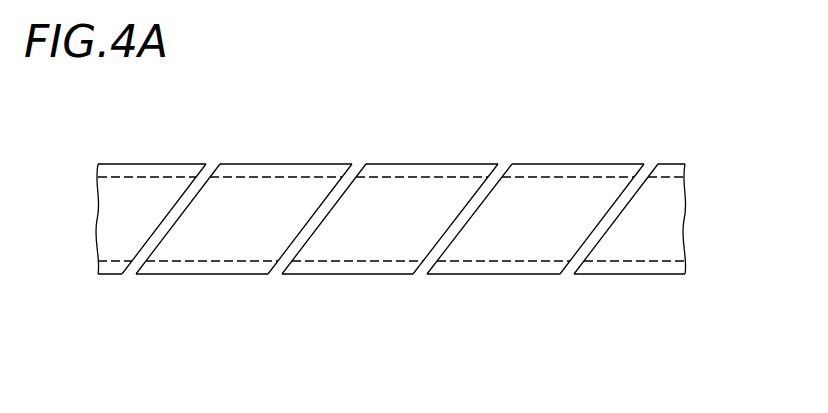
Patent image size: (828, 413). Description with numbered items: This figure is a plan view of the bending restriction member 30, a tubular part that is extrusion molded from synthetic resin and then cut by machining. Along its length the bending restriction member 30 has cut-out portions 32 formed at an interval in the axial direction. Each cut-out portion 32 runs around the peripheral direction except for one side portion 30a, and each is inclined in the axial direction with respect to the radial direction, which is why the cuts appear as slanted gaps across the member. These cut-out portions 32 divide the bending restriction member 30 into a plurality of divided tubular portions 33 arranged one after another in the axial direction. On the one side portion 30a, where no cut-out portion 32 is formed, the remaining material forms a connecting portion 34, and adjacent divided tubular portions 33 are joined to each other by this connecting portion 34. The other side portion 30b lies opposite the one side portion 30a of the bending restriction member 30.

The bending restriction member 30 is at (387, 211).
The one side portion 30a is at (155, 163).
The other side portion 30b is at (112, 274).
The cut-out portion 32 is at (165, 226).
The divided tubular portion 33 is at (230, 274).
The connecting portion 34 is at (213, 164).